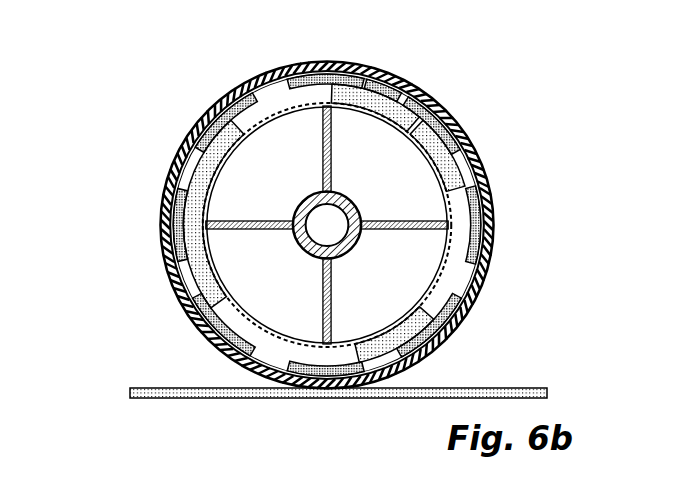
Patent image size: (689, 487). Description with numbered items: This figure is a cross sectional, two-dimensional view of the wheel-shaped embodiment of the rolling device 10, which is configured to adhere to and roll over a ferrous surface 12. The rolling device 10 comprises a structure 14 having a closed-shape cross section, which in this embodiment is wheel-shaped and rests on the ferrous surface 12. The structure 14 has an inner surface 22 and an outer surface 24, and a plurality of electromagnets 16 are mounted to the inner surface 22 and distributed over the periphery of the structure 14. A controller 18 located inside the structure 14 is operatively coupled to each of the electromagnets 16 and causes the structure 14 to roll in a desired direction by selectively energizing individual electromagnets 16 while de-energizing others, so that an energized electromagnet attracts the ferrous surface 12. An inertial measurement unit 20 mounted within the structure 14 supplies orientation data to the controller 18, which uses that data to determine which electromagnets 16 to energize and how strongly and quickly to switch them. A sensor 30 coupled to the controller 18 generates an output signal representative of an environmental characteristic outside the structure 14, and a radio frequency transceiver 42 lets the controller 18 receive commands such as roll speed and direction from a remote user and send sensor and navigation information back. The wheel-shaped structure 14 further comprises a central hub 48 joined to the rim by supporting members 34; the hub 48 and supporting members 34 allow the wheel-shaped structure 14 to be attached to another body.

The rolling device 10 is at (100, 72).
The ferrous surface 12 is at (522, 387).
The structure 14 is at (214, 103).
The electromagnets 16 is at (402, 79).
The controller 18 is at (222, 165).
The inertial measurement unit 20 is at (378, 330).
The inner surface 22 is at (266, 366).
The outer surface 24 is at (168, 282).
The sensor 30 is at (432, 164).
The supporting members 34 is at (322, 144).
The radio frequency transceiver 42 is at (372, 109).
The hub 48 is at (356, 243).